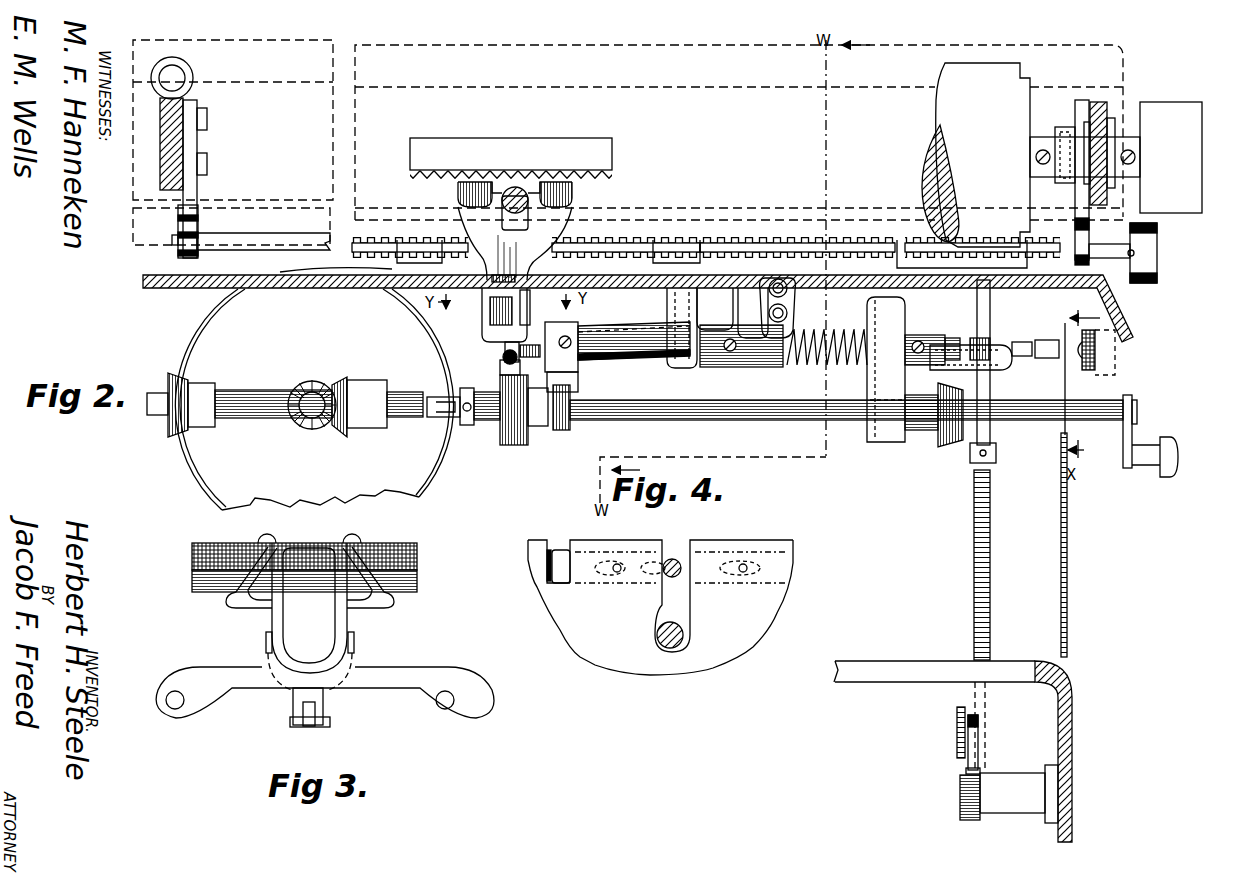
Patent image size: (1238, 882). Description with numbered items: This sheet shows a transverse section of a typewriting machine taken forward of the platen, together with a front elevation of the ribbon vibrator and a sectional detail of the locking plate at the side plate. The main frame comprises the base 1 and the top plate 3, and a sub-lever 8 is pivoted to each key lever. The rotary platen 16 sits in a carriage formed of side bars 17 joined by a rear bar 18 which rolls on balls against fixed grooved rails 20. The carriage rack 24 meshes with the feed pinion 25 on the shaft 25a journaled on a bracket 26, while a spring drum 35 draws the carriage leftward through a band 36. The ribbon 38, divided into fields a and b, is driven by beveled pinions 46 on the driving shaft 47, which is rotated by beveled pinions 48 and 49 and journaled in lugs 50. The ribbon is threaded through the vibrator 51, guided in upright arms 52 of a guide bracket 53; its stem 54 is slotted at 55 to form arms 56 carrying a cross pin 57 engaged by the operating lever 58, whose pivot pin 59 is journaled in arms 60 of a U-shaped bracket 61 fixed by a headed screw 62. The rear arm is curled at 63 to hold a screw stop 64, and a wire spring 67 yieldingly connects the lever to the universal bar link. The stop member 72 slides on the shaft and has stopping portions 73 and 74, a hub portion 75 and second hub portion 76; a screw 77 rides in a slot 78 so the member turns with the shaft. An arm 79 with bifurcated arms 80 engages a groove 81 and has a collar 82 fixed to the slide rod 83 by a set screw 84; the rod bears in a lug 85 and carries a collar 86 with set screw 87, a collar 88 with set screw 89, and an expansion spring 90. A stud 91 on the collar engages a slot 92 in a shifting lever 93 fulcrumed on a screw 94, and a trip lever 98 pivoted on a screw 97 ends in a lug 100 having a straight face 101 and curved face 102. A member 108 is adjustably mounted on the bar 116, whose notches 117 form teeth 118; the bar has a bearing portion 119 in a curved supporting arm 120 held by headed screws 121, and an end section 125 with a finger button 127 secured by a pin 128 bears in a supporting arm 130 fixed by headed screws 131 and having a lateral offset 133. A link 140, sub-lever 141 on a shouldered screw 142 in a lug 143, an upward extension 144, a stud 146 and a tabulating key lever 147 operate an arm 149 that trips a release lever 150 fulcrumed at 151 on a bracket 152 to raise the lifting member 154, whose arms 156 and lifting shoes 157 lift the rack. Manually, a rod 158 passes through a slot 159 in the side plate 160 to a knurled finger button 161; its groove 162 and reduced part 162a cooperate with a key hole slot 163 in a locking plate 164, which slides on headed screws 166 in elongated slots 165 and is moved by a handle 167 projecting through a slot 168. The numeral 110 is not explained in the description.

In FIG. 2, the base 1 is at (1070, 720).
In FIG. 2, the top plate 3 is at (1114, 322).
In FIG. 2, the sub-lever 8 is at (761, 96).
In FIG. 2, the rotary platen 16 is at (976, 155).
In FIG. 2, the side bars 17 is at (160, 130).
In FIG. 2, the rear bar 18 is at (136, 168).
In FIG. 2, the grooved rails 20 is at (136, 53).
In FIG. 2, the carriage rack 24 is at (519, 149).
In FIG. 2, the feed pinion 25 is at (540, 229).
In FIG. 2, the shaft 25a is at (528, 187).
In FIG. 2, the bracket 26 is at (482, 216).
In FIG. 2, the spring drum 35 is at (200, 331).
In FIG. 2, the band or strap 36 is at (180, 356).
In FIG. 3, the ribbon 38 is at (417, 576).
In FIG. 2, the beveled driving pinion 46 is at (170, 428).
In FIG. 2, the driving shaft 47 is at (400, 420).
In FIG. 4, the driving shaft 47 is at (657, 638).
In FIG. 2, the beveled pinion 48 is at (339, 433).
In FIG. 2, the beveled pinion 49 is at (316, 381).
In FIG. 2, the lugs 50 is at (885, 444).
In FIG. 3, the vibratory ribbon carrier 51 is at (352, 541).
In FIG. 3, the upright arms 52 is at (343, 609).
In FIG. 3, the guide bracket 53 is at (232, 682).
In FIG. 3, the stem 54 is at (323, 702).
In FIG. 3, the slot 55 is at (316, 710).
In FIG. 3, the arms 56 is at (310, 728).
In FIG. 3, the cross pin 57 is at (292, 723).
In FIG. 2, the operating lever 58 is at (524, 318).
In FIG. 2, the pivot pin 59 is at (492, 330).
In FIG. 2, the arms 60 is at (505, 349).
In FIG. 2, the U-shaped bracket 61 is at (482, 305).
In FIG. 2, the headed screw 62 is at (493, 275).
In FIG. 2, the curled end 63 is at (524, 350).
In FIG. 2, the adjustable screw stop 64 is at (505, 362).
In FIG. 2, the wire spring 67 is at (490, 340).
In FIG. 2, the stop member 72 is at (543, 427).
In FIG. 2, the cylindrical stopping portion 73 is at (514, 446).
In FIG. 2, the cylindrical stopping portion 74 is at (486, 421).
In FIG. 2, the hub portion 75 is at (467, 426).
In FIG. 2, the second hub portion 76 is at (565, 430).
In FIG. 2, the screw 77 is at (500, 396).
In FIG. 2, the slot 78 is at (447, 400).
In FIG. 2, the arm 79 is at (558, 390).
In FIG. 2, the arms of the bifurcation 80 is at (553, 404).
In FIG. 2, the circumferential groove 81 is at (552, 435).
In FIG. 2, the collar 82 is at (578, 334).
In FIG. 2, the slide rod 83 is at (952, 337).
In FIG. 2, the set screw 84 is at (600, 334).
In FIG. 2, the lug 85 is at (683, 370).
In FIG. 2, the collar 86 is at (915, 363).
In FIG. 2, the set screw 87 is at (918, 341).
In FIG. 2, the collar 88 is at (775, 367).
In FIG. 2, the set screw 89 is at (730, 366).
In FIG. 2, the expansion spring 90 is at (838, 368).
In FIG. 2, the pin or stud 91 is at (796, 364).
In FIG. 2, the slot 92 is at (752, 368).
In FIG. 2, the shifting lever 93 is at (790, 315).
In FIG. 2, the headed shouldered screw 94 is at (792, 300).
In FIG. 2, the shouldered screw 97 is at (769, 283).
In FIG. 2, the trip lever 98 is at (810, 277).
In FIG. 2, the lug 100 is at (822, 248).
In FIG. 2, the straight working face 101 is at (790, 282).
In FIG. 2, the curved face 102 is at (796, 248).
In FIG. 2, the member 108 is at (898, 262).
In FIG. 2, the rack bar 110 is at (395, 285).
In FIG. 2, the bar or rod 116 is at (266, 246).
In FIG. 2, the notches 117 is at (596, 248).
In FIG. 2, the teeth 118 is at (630, 248).
In FIG. 2, the cylindrical bearing portion 119 is at (176, 246).
In FIG. 2, the curved supporting arm 120 is at (197, 188).
In FIG. 2, the headed screws 121 is at (207, 158).
In FIG. 2, the end section 125 is at (1109, 263).
In FIG. 2, the finger button 127 is at (1157, 250).
In FIG. 2, the pin 128 is at (1131, 257).
In FIG. 2, the supporting arm 130 is at (1075, 240).
In FIG. 2, the headed screws 131 is at (1060, 126).
In FIG. 2, the lateral offset 133 is at (1076, 268).
In FIG. 2, the link 140 is at (990, 496).
In FIG. 2, the sub-lever 141 is at (960, 768).
In FIG. 2, the shouldered screw 142 is at (958, 800).
In FIG. 2, the lug 143 is at (1010, 810).
In FIG. 2, the upward extension 144 is at (985, 746).
In FIG. 2, the pin or stud 146 is at (980, 726).
In FIG. 2, the tabulating key lever 147 is at (957, 740).
In FIG. 2, the arm 149 is at (978, 337).
In FIG. 2, the release lever 150 is at (648, 336).
In FIG. 2, the fulcrum 151 is at (750, 313).
In FIG. 2, the bracket 152 is at (715, 309).
In FIG. 2, the release arm or lifting member 154 is at (527, 268).
In FIG. 2, the arms 156 is at (458, 193).
In FIG. 2, the lifting shoes 157 is at (604, 184).
In FIG. 4, the lifting shoes 157 is at (547, 565).
In FIG. 2, the rod or bar 158 is at (1020, 341).
In FIG. 4, the rod or bar 158 is at (663, 575).
In FIG. 2, the opening or slot 159 is at (1070, 368).
In FIG. 4, the opening or slot 159 is at (683, 618).
In FIG. 2, the side plate 160 is at (1067, 584).
In FIG. 4, the side plate 160 is at (750, 640).
In FIG. 2, the knurled finger button 161 is at (1094, 341).
In FIG. 2, the circumferential groove 162 is at (1048, 360).
In FIG. 2, the reduced part 162a is at (1052, 340).
In FIG. 4, the key hole slot 163 is at (671, 557).
In FIG. 2, the locking plate 164 is at (1045, 379).
In FIG. 4, the locking plate 164 is at (680, 583).
In FIG. 4, the elongated slots 165 is at (729, 562).
In FIG. 4, the headed screws 166 is at (618, 573).
In FIG. 2, the handle or finger piece 167 is at (1088, 372).
In FIG. 4, the slot 168 is at (558, 546).
In FIG. 3, the field a is at (400, 548).
In FIG. 3, the field b is at (410, 598).